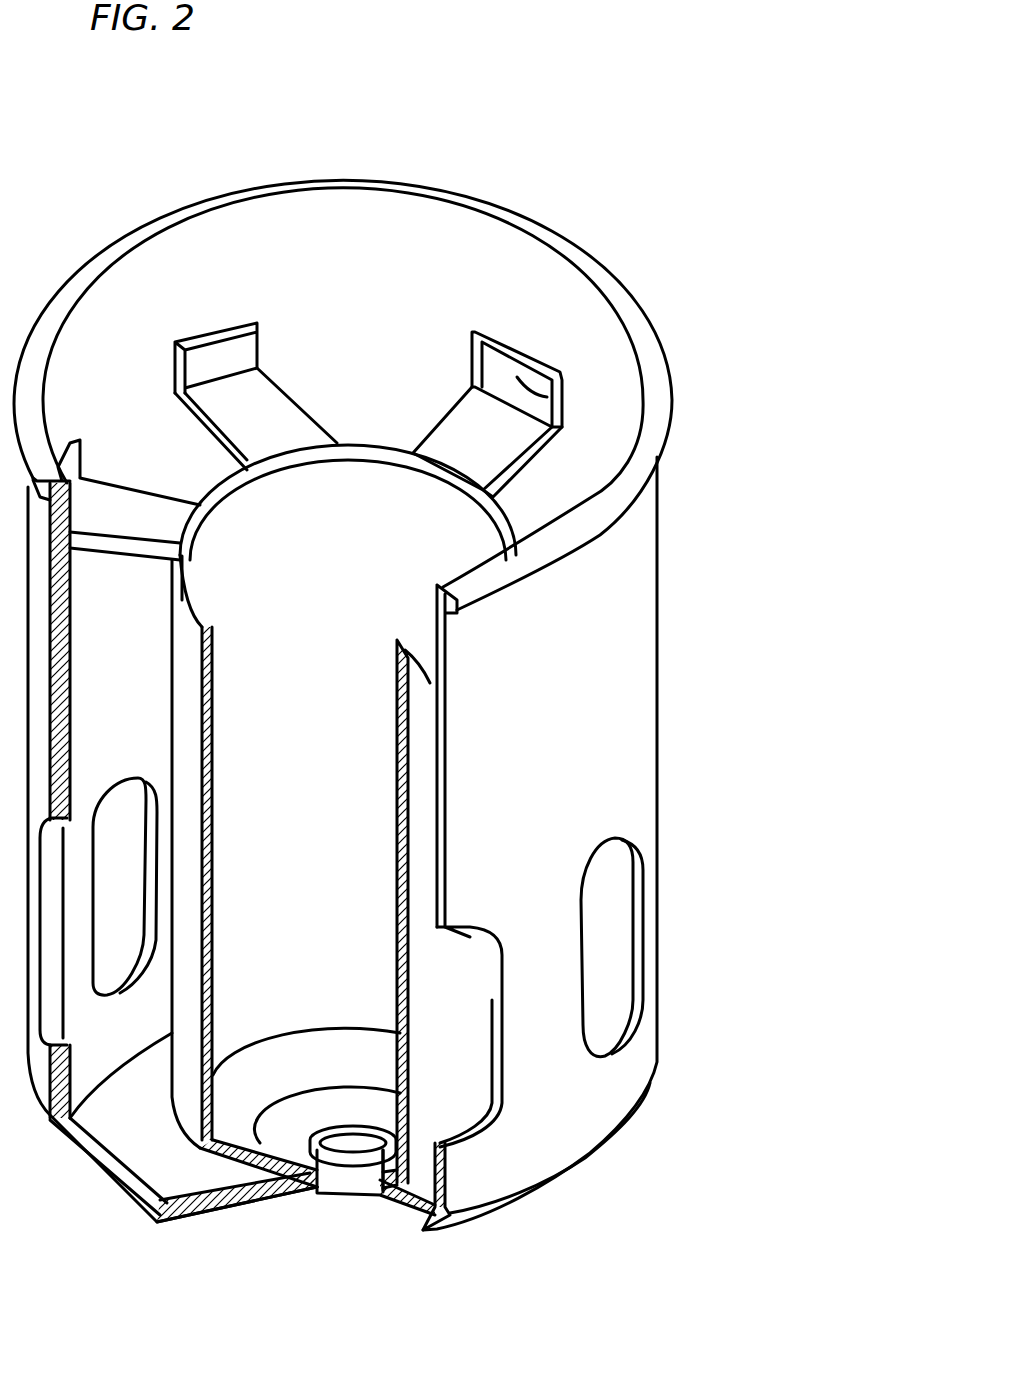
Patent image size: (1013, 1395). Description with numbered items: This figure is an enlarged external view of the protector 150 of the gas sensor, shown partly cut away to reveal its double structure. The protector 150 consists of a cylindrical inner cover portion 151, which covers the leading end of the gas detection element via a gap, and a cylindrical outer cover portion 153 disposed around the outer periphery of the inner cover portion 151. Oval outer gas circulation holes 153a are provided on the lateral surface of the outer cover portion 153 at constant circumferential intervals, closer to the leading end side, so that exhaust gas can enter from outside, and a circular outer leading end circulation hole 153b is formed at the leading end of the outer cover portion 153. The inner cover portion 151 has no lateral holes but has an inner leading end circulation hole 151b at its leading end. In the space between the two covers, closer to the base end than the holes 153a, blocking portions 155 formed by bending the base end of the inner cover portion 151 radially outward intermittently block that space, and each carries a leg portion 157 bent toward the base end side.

The protector 150 is at (628, 222).
The inner cover portion 151 is at (447, 1080).
The inner leading end circulation hole 151b is at (337, 1185).
The outer cover portion 153 is at (629, 770).
The outer gas circulation holes 153a is at (613, 955).
The outer leading end circulation hole 153b is at (368, 1178).
The blocking portions 155 is at (497, 430).
The leg portion 157 is at (565, 401).